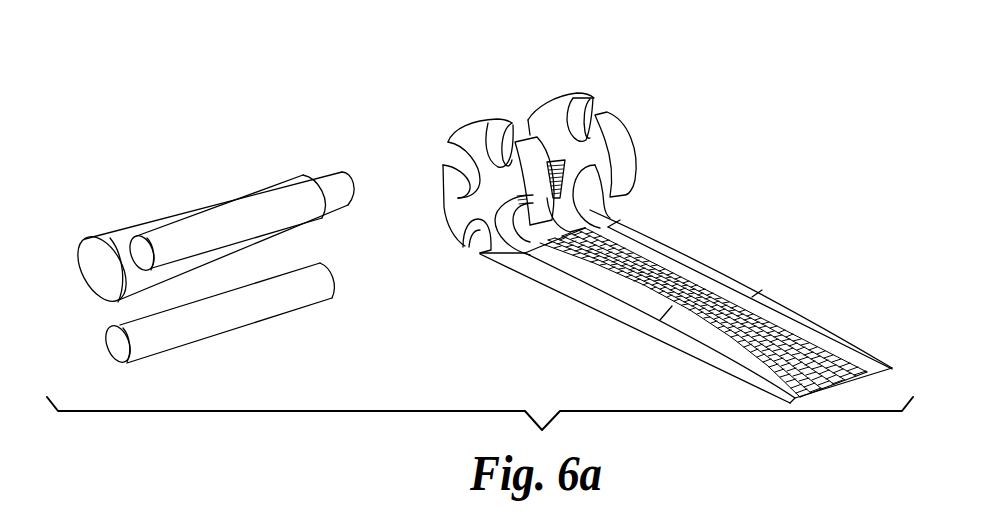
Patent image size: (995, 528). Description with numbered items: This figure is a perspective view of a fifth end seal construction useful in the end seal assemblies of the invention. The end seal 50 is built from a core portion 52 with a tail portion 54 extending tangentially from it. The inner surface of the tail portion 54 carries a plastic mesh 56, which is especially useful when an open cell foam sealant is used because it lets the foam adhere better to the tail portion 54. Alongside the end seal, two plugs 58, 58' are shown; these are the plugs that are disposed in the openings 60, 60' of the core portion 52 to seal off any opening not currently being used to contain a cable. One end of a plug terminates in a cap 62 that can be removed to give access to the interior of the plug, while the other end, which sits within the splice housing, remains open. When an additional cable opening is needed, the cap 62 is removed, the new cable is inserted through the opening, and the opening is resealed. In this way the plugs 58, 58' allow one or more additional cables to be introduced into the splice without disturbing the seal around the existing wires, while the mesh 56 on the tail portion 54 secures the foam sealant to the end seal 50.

The end seal 50 is at (753, 108).
The core portion 52 is at (635, 141).
The tail portion 54 is at (685, 258).
The plastic mesh 56 is at (787, 333).
The plug 58 is at (206, 280).
The plug 58' is at (226, 218).
The opening 60 is at (492, 184).
The opening 60' is at (504, 117).
The cap 62 is at (87, 247).